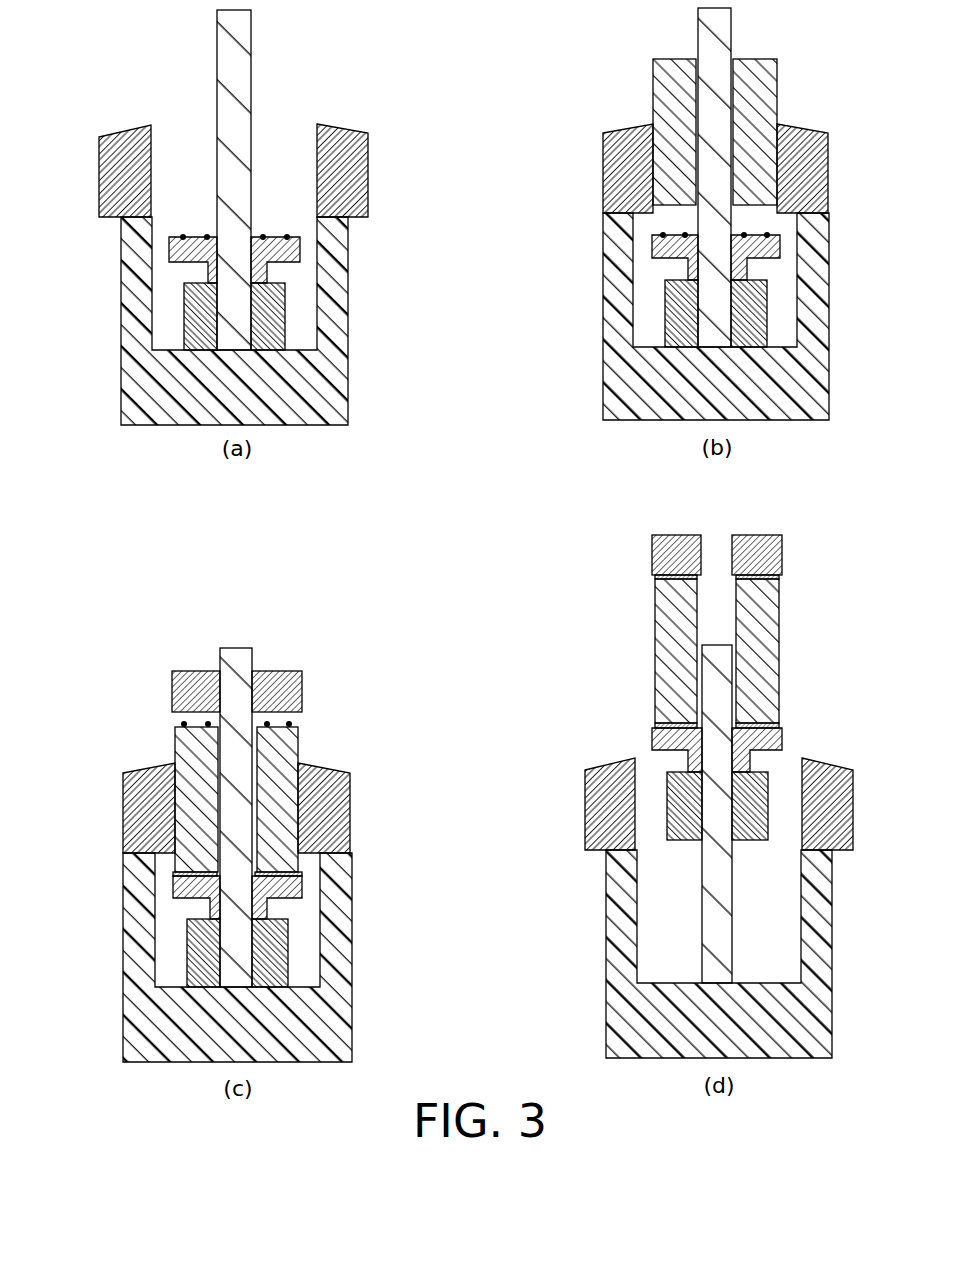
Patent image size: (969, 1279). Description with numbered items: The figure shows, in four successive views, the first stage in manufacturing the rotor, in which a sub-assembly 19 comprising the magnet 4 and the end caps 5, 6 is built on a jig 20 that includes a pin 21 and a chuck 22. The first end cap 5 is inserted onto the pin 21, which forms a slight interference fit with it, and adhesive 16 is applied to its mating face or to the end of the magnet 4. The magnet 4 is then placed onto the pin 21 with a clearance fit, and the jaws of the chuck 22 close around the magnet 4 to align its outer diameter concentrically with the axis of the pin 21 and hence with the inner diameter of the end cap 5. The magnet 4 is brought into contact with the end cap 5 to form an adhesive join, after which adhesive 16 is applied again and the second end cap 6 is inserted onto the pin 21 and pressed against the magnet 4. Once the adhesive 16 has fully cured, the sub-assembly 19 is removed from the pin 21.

The magnet 4 is at (653, 90).
The first end cap 5 is at (288, 262).
The second end cap 6 is at (302, 675).
The adhesive 16 is at (207, 234).
The sub-assembly 19 is at (655, 663).
The jig 20 is at (121, 373).
The pin 21 is at (251, 58).
The chuck 22 is at (99, 169).